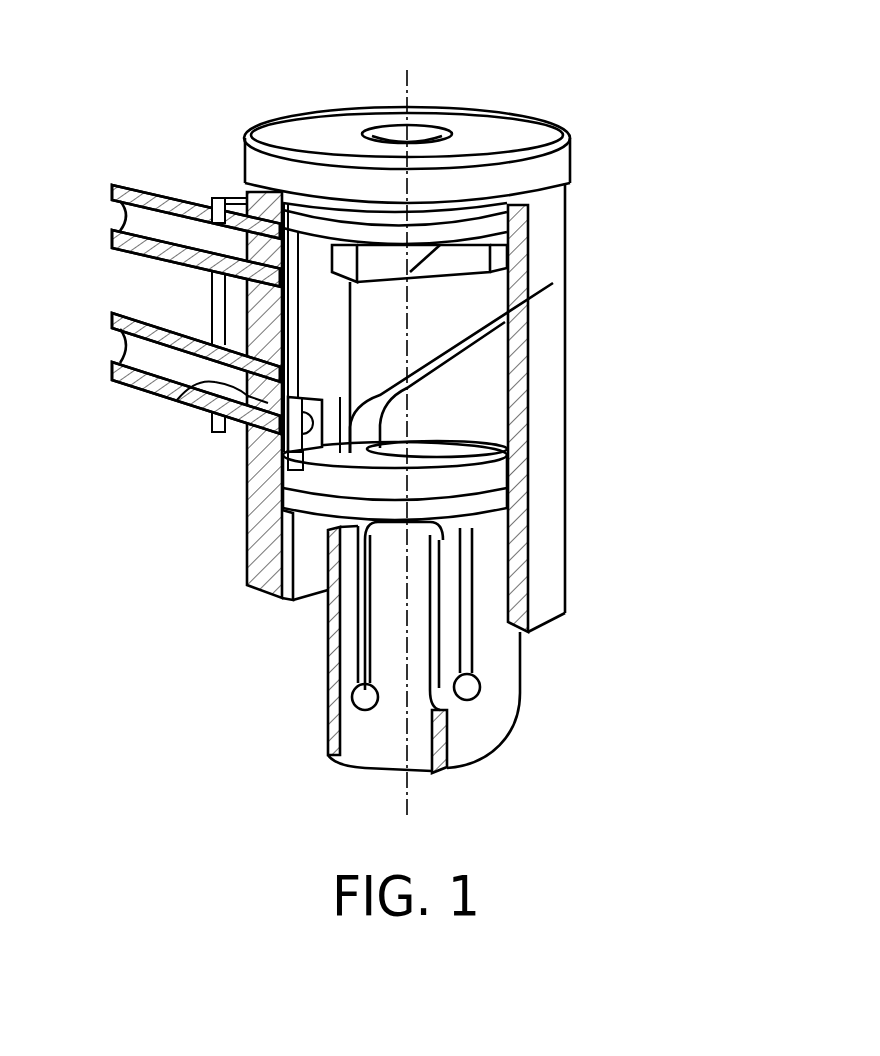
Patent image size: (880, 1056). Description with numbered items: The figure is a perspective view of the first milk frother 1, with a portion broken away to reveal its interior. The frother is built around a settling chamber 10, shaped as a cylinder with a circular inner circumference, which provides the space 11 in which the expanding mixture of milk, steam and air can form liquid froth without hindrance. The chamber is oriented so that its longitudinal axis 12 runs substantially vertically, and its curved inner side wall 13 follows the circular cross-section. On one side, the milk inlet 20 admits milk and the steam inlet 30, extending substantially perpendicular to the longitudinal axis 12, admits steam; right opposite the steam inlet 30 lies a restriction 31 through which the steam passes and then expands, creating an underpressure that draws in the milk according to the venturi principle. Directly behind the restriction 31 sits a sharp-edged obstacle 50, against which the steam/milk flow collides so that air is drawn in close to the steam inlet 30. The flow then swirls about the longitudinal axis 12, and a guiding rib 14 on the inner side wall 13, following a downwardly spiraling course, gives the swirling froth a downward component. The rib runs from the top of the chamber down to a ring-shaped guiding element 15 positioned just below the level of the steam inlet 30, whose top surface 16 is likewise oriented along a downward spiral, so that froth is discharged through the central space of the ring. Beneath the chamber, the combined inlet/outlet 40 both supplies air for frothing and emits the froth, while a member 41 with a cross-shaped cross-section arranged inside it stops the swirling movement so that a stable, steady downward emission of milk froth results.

The first milk frother 1 is at (672, 92).
The settling chamber 10 is at (460, 415).
The space 11 is at (467, 303).
The longitudinal axis 12 is at (408, 83).
The inner side wall 13 is at (510, 393).
The guiding rib 14 is at (483, 343).
The ring-shaped guiding element 15 is at (295, 480).
The top surface 16 is at (497, 438).
The milk inlet 20 is at (112, 215).
The steam inlet 30 is at (112, 348).
The restriction 31 is at (177, 400).
The combined inlet/outlet 40 is at (305, 568).
The member 41 is at (353, 725).
The obstacle 50 is at (290, 444).